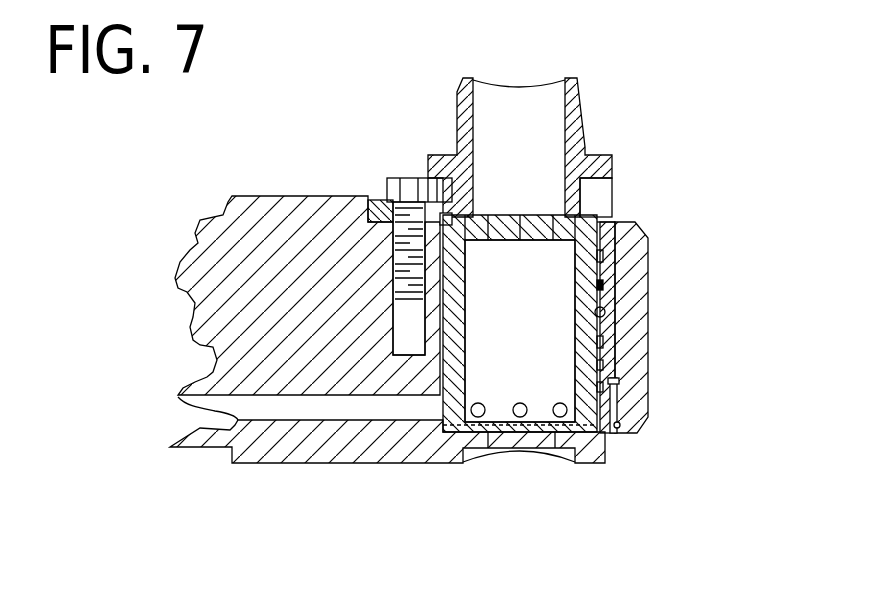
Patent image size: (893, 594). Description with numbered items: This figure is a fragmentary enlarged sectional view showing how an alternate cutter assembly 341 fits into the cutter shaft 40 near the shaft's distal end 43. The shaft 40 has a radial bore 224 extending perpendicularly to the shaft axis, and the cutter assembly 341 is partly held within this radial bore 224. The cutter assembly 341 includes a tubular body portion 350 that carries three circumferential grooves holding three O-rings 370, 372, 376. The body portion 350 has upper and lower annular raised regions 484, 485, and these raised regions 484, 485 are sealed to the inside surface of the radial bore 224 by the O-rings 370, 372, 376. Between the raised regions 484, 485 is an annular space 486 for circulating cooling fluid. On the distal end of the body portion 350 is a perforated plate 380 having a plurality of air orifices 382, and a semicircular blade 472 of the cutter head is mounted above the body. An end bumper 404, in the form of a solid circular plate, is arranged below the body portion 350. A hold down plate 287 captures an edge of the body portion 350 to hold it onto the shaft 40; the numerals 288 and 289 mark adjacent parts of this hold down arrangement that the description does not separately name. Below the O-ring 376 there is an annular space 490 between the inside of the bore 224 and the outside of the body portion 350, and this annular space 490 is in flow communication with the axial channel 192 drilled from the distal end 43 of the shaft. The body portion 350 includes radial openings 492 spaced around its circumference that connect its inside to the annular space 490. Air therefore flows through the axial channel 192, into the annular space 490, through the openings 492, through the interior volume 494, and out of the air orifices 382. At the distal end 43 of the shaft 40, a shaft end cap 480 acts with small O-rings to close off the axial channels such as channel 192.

The shaft 40 is at (288, 192).
The axial channel 192 is at (330, 408).
The hold down plate 287 is at (383, 195).
The bolt 288 is at (448, 195).
The bolt head 289 is at (408, 178).
The cutter assembly 341 is at (596, 106).
The semicircular blade 472 is at (580, 78).
The tubular body portion 350 is at (463, 323).
The perforated plate 380 is at (497, 216).
The air orifices 382 is at (553, 216).
The volume 494 is at (495, 271).
The radial openings 492 is at (523, 403).
The annular space 490 is at (440, 408).
The end bumper 404 is at (493, 425).
The O-ring 372 is at (603, 287).
The distal end 43 is at (650, 226).
The O-ring 370 is at (617, 220).
The upper annular raised region 484 is at (602, 258).
The radial bore 224 is at (600, 313).
The annular space 486 is at (600, 342).
The lower annular raised region 485 is at (600, 366).
The O-ring 376 is at (602, 387).
The shaft end cap 480 is at (648, 413).